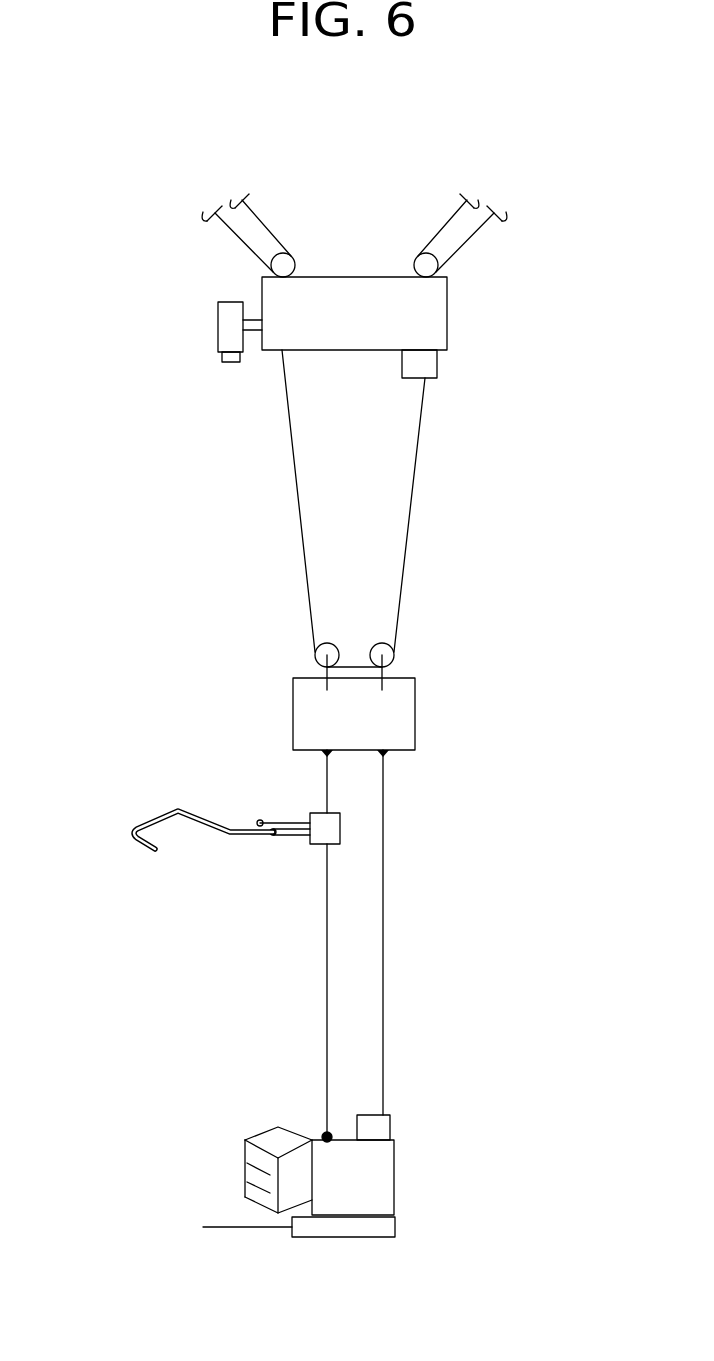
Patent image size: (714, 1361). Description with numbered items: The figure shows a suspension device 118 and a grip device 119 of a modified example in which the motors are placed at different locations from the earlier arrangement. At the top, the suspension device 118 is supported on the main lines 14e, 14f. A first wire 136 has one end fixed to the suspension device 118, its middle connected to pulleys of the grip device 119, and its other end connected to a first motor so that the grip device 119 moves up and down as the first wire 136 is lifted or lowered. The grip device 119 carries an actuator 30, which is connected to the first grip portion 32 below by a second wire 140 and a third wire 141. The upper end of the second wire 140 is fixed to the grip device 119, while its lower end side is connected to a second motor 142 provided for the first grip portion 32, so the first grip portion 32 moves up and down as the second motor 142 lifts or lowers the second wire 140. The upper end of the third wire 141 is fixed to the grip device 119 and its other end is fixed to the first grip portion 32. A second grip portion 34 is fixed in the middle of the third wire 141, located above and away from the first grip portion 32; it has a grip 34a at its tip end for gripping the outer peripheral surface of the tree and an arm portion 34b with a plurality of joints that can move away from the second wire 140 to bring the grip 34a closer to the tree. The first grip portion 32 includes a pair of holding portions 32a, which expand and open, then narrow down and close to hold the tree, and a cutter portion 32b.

The main line 14e is at (262, 218).
The main line 14f is at (448, 218).
The suspension device 118 is at (433, 307).
The first wire 136 is at (420, 478).
The grip device 119 is at (369, 691).
The actuator 30 is at (291, 708).
The second grip portion 34 is at (217, 831).
The grip 34a is at (168, 812).
The arm portion 34b is at (287, 837).
The second wire 140 is at (383, 867).
The third wire 141 is at (327, 982).
The second motor 142 is at (392, 1127).
The first grip portion 32 is at (373, 1183).
The holding portion 32a is at (276, 1138).
The cutter portion 32b is at (230, 1228).